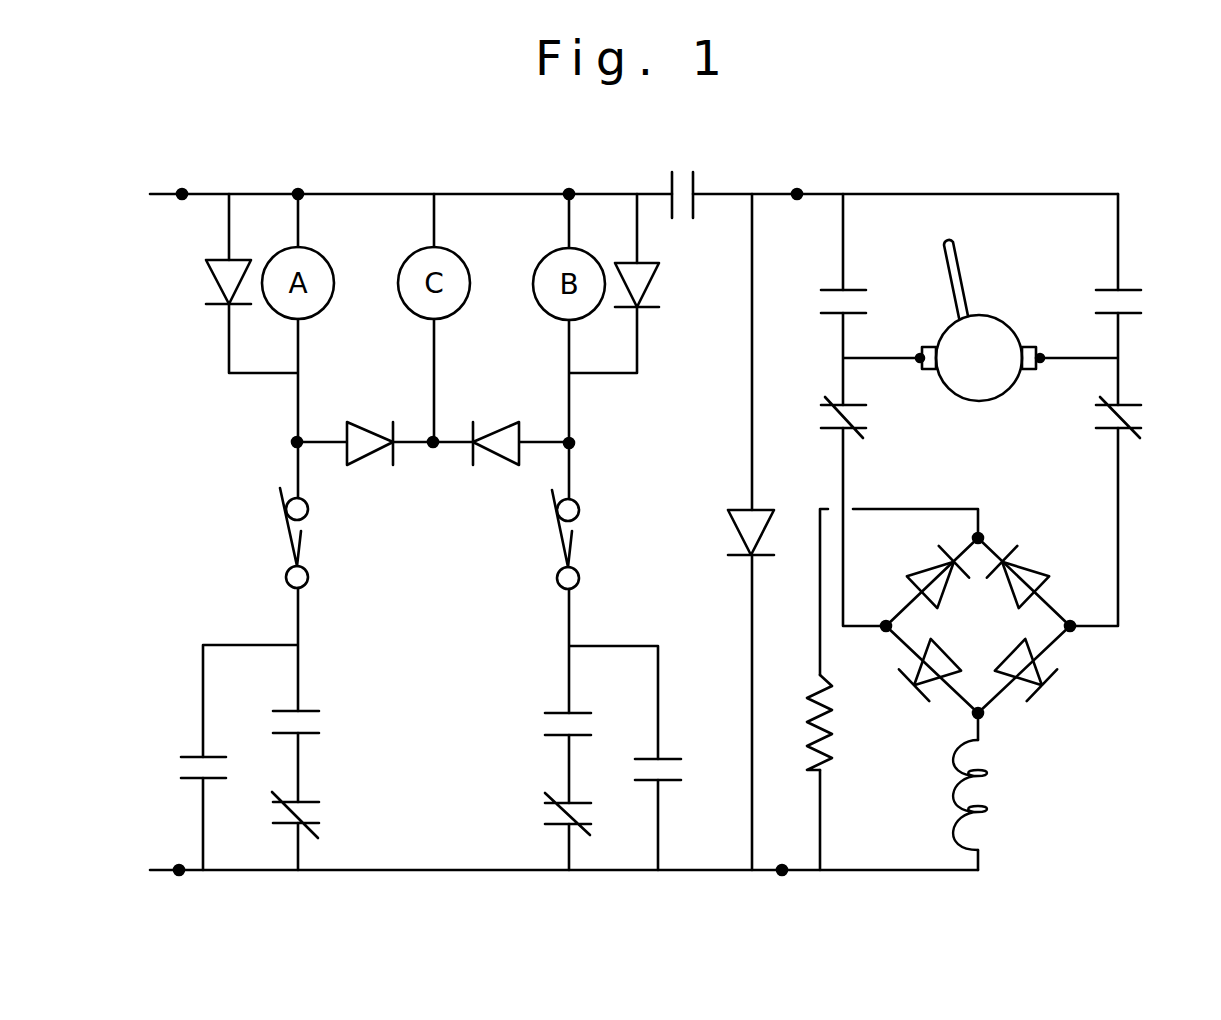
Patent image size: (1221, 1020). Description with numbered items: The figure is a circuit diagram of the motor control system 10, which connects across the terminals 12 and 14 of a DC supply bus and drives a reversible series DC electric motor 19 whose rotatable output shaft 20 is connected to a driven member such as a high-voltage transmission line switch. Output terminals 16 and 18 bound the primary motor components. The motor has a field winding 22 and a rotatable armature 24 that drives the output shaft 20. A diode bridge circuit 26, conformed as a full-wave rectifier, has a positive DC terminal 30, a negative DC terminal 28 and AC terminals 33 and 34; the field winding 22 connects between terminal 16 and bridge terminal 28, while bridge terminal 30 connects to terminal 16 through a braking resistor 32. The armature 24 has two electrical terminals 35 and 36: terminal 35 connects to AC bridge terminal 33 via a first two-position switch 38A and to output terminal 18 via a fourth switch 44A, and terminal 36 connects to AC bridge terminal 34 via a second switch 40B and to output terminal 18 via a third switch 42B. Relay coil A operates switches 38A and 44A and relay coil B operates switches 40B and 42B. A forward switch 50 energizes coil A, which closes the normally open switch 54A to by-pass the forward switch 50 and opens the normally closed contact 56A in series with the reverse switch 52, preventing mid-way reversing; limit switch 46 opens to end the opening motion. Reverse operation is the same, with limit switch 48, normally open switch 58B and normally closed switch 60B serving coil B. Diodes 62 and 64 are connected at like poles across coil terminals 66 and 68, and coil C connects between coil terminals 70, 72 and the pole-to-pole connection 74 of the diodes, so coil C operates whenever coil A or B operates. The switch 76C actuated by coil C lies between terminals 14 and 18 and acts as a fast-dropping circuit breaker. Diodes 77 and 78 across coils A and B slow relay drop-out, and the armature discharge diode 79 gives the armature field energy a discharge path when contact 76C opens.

The motor control system 10 is at (193, 530).
The DC supply bus terminal 12 is at (180, 872).
The DC supply bus terminal 14 is at (182, 193).
The output terminal 16 is at (783, 873).
The output terminal 18 is at (797, 195).
The reversible series DC electric motor 19 is at (979, 352).
The output shaft 20 is at (960, 280).
The field winding 22 is at (937, 795).
The armature 24 is at (982, 404).
The diode bridge circuit 26 is at (998, 639).
The DC bridge terminal 28 is at (978, 716).
The DC bridge terminal 30 is at (978, 536).
The braking resistor 32 is at (830, 758).
The AC bridge terminal 33 is at (884, 628).
The AC bridge terminal 34 is at (1072, 628).
The armature terminal 35 is at (918, 358).
The armature terminal 36 is at (1044, 358).
The first controllable two-position switch 38A is at (830, 436).
The second switch 40B is at (1135, 410).
The third switch 42B is at (1135, 296).
The fourth switch 44A is at (858, 290).
The limit switch 46 is at (290, 548).
The limit switch 48 is at (573, 542).
The forward switch 50 is at (315, 710).
The reverse switch 52 is at (548, 713).
The normally open switch 54A is at (183, 757).
The normally closed contact 56A is at (545, 826).
The normally open switch 58B is at (668, 758).
The normally closed switch 60B is at (313, 802).
The diode 62 is at (365, 428).
The diode 64 is at (503, 428).
The coil terminal 66 is at (297, 442).
The coil terminal 68 is at (569, 443).
The coil terminal 70 is at (298, 193).
The coil terminal 72 is at (569, 194).
The pole-to-pole connection 74 is at (433, 444).
The switch 76C is at (700, 180).
The diode 77 is at (212, 275).
The diode 78 is at (658, 280).
The armature discharge diode 79 is at (727, 517).